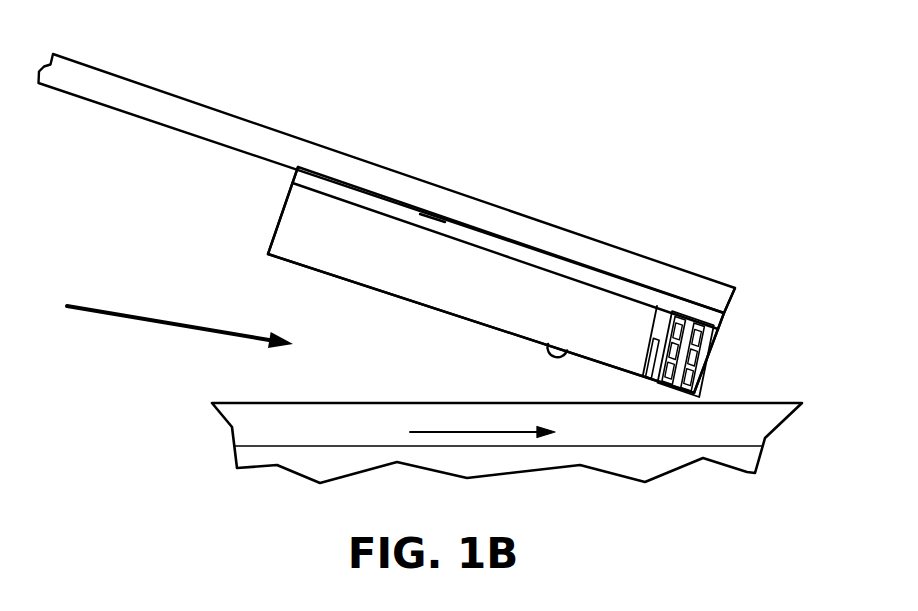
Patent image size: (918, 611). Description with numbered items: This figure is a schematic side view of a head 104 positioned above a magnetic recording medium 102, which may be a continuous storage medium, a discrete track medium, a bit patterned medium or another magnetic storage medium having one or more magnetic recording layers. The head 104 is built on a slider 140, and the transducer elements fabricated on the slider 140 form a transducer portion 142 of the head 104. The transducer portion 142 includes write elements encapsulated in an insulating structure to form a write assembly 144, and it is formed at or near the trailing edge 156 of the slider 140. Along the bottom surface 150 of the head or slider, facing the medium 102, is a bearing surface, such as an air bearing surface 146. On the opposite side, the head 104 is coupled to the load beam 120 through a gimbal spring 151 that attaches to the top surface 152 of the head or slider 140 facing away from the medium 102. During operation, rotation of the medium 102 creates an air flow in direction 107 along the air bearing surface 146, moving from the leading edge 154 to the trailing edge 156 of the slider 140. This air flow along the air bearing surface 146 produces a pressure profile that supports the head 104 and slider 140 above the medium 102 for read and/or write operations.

The medium 102 is at (734, 437).
The head 104 is at (727, 272).
The direction of air flow 107 is at (482, 432).
The load beam 120 is at (318, 158).
The slider 140 is at (470, 270).
The transducer portion 142 is at (728, 321).
The write assembly 144 is at (703, 298).
The air bearing surface 146 is at (434, 316).
The bottom surface 150 is at (572, 347).
The gimbal spring 151 is at (434, 216).
The top surface 152 is at (567, 260).
The leading edge 154 is at (272, 238).
The trailing edge 156 is at (715, 348).